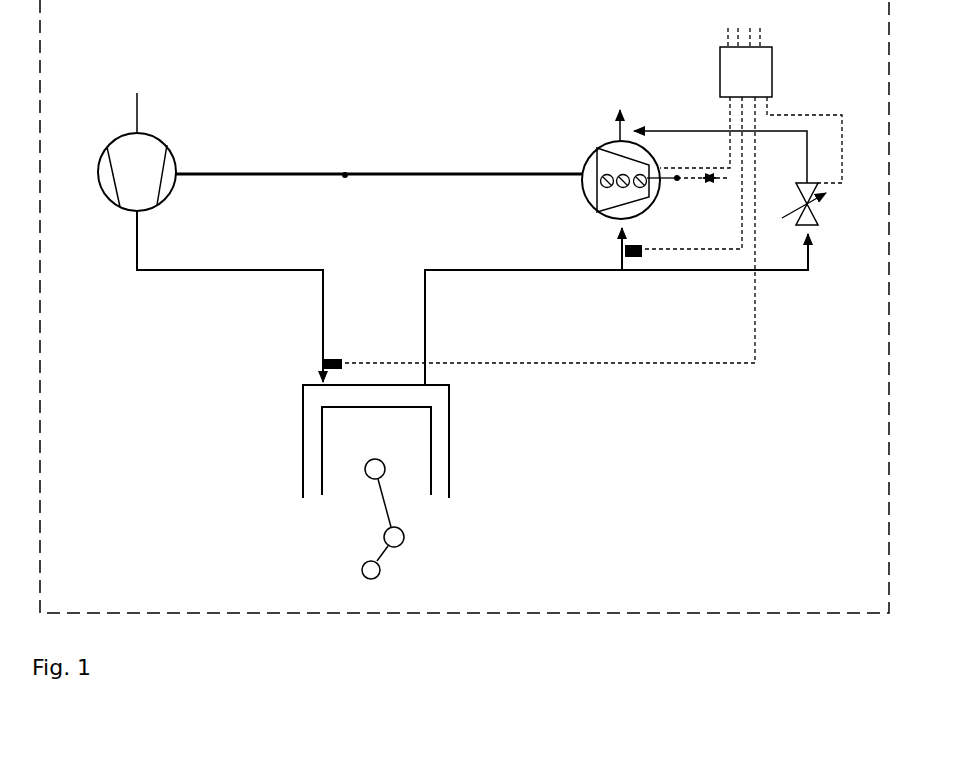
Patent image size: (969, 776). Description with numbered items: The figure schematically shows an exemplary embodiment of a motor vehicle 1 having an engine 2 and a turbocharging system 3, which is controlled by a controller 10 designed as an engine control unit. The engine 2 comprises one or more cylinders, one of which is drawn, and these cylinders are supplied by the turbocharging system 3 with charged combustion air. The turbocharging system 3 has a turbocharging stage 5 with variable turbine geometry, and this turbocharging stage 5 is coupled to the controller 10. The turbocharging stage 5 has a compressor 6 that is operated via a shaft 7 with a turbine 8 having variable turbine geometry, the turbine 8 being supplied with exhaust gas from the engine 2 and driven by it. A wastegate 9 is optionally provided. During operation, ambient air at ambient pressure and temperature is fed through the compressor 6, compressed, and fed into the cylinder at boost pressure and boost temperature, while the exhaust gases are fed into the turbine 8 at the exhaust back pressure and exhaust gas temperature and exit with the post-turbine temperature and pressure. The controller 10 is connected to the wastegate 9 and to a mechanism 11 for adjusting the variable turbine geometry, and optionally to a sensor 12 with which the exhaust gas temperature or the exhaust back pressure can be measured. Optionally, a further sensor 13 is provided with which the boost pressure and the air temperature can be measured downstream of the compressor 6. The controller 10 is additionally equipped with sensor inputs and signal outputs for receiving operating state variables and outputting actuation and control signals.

The motor vehicle 1 is at (370, 628).
The engine 2 is at (270, 375).
The turbocharging system 3 is at (473, 219).
The turbocharging stage 5 is at (398, 170).
The compressor 6 is at (103, 177).
The shaft 7 is at (345, 175).
The turbine 8 is at (595, 148).
The wastegate 9 is at (813, 212).
The controller 10 is at (592, 195).
The mechanism for adjusting the variable turbine geometry 11 is at (677, 178).
The sensor 12 is at (634, 257).
The further sensor 13 is at (342, 368).